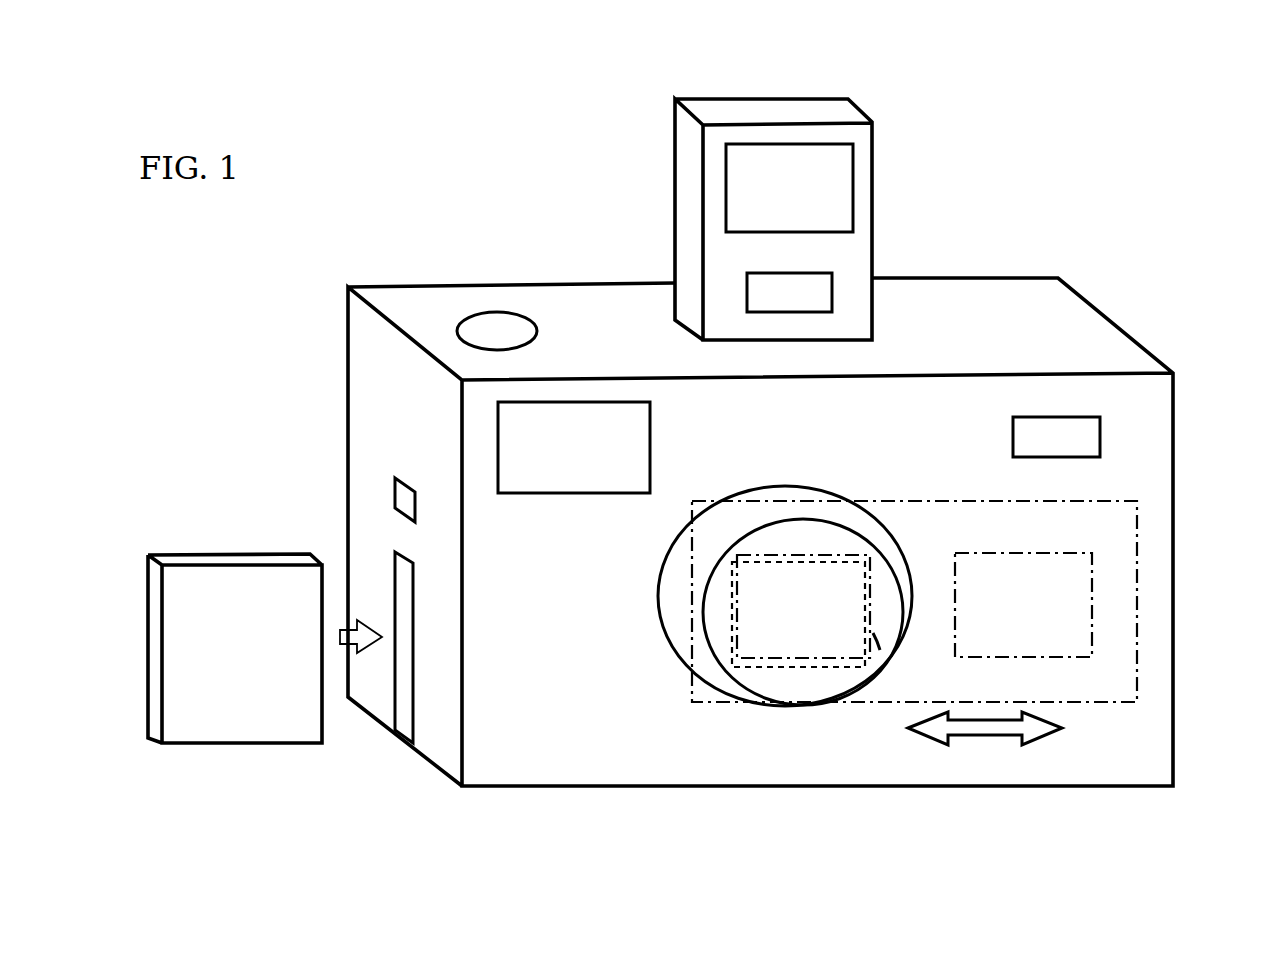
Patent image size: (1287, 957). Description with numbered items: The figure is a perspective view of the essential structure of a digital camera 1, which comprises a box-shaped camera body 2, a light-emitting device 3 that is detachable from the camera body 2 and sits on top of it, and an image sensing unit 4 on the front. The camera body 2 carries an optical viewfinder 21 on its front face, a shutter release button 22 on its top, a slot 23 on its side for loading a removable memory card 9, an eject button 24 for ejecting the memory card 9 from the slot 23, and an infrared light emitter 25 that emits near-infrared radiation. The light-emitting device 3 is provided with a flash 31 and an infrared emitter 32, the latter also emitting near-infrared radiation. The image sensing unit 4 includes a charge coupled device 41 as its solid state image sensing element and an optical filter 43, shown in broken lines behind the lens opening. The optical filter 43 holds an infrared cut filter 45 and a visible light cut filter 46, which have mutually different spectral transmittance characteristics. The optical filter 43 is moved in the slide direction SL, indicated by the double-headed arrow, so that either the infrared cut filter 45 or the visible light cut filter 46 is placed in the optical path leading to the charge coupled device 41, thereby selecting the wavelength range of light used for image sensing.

The digital camera 1 is at (467, 166).
The camera body 2 is at (1137, 316).
The light-emitting device 3 is at (852, 93).
The image sensing unit 4 is at (763, 745).
The memory card 9 is at (245, 745).
The optical viewfinder 21 is at (496, 434).
The shutter release button 22 is at (502, 328).
The slot 23 is at (400, 745).
The eject button 24 is at (393, 485).
The infrared light emitter 25 is at (1100, 437).
The flash 31 is at (853, 187).
The infrared emitter 32 is at (832, 286).
The charge coupled device (CCD) 41 is at (730, 603).
The optical filter 43 is at (920, 501).
The infrared cut filter 45 is at (873, 633).
The visible light cut filter 46 is at (1092, 600).
The slide direction SL is at (977, 740).